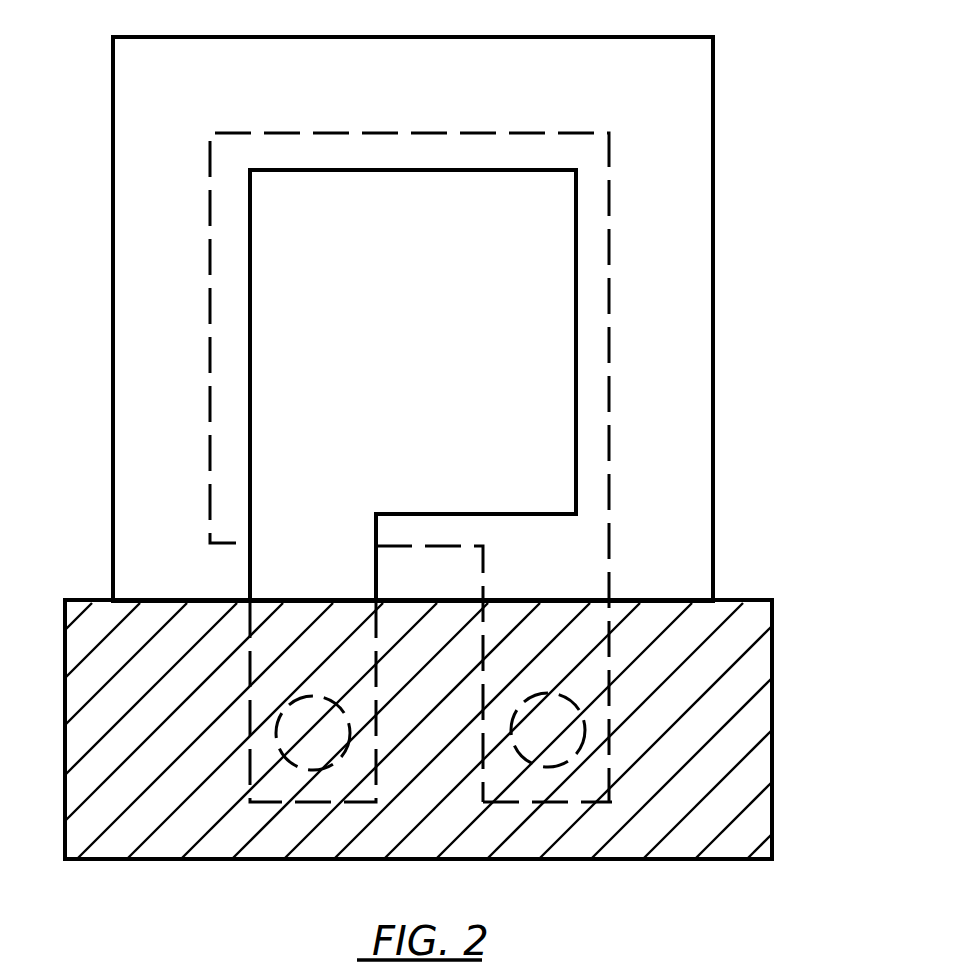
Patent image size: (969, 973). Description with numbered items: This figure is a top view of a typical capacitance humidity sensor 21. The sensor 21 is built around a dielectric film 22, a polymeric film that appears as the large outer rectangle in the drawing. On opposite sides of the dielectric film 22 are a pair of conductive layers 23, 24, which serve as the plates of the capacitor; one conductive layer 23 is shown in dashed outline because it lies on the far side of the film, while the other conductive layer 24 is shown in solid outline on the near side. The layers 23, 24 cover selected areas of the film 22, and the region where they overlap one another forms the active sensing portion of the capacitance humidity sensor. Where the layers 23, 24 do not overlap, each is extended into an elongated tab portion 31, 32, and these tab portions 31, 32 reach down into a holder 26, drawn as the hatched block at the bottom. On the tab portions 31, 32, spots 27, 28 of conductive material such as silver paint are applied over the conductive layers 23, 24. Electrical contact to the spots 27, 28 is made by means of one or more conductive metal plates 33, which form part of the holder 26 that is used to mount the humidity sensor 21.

The humidity sensor 21 is at (724, 78).
The dielectric film 22 is at (672, 192).
The conductive layer 23 is at (610, 365).
The conductive layer 24 is at (550, 412).
The holder 26 is at (779, 698).
The spot of conductive material 27 is at (295, 770).
The spot of conductive material 28 is at (540, 768).
The elongated tab portion 31 is at (263, 802).
The elongated tab portion 32 is at (502, 803).
The conductive metal plate 33 is at (665, 800).